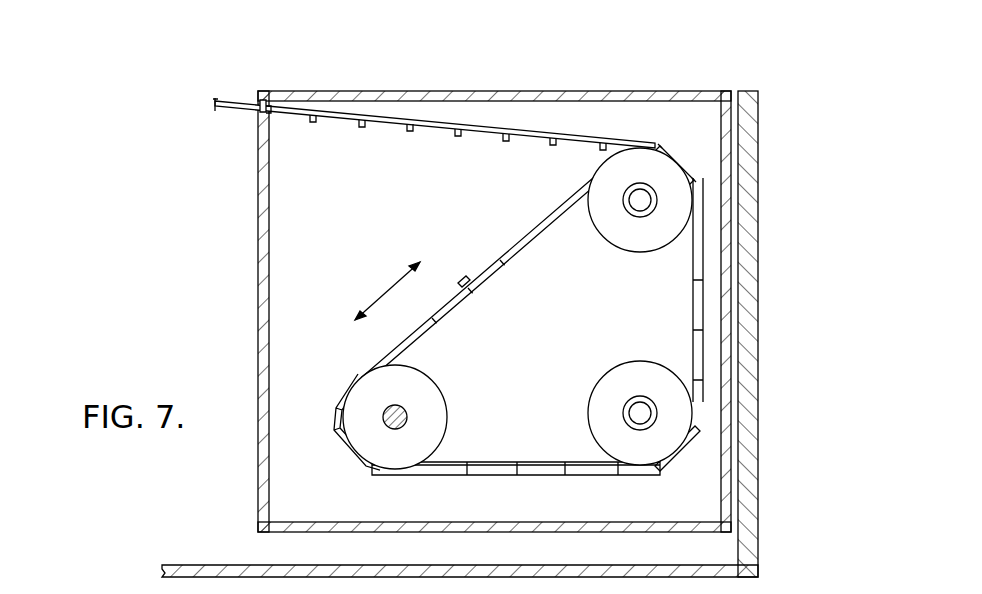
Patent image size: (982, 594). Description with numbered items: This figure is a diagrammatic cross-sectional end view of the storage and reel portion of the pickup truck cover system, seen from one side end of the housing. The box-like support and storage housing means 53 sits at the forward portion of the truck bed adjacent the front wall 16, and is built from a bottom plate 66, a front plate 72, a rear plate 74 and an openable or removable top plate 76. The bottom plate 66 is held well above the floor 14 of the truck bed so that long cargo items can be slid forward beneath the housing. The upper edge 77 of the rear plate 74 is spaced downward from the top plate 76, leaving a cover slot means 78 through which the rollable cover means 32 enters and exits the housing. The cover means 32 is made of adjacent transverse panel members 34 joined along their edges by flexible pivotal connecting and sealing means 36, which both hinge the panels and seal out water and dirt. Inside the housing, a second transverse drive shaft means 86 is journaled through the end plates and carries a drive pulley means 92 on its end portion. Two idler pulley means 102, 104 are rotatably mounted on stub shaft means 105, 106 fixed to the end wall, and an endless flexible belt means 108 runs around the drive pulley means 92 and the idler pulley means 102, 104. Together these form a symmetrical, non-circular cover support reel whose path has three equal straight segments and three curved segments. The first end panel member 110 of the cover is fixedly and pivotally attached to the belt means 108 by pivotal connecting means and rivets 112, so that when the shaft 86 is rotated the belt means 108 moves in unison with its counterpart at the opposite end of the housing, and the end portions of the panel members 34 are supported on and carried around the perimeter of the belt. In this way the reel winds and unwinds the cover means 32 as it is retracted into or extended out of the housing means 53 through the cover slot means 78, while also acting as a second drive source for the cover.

The floor 14 is at (190, 565).
The front wall 16 is at (750, 274).
The rollable cover means 32 is at (436, 109).
The transverse panel members 34 is at (615, 131).
The pivotal connecting and sealing means 36 is at (662, 143).
The support and storage housing means 53 is at (458, 294).
The bottom plate 66 is at (470, 521).
The front plate 72 is at (731, 132).
The rear plate 74 is at (258, 276).
The top plate 76 is at (497, 91).
The upper edge 77 is at (270, 116).
The cover slot means 78 is at (262, 108).
The second transverse drive shaft means 86 is at (404, 409).
The drive pulley means 92 is at (421, 414).
The idler pulley means 102 is at (606, 393).
The idler pulley means 104 is at (616, 215).
The stub shaft means 105 is at (636, 393).
The stub shaft means 106 is at (633, 214).
The endless flexible belt means 108 is at (500, 263).
The first end panel member 110 is at (432, 298).
The rivets 112 is at (466, 278).